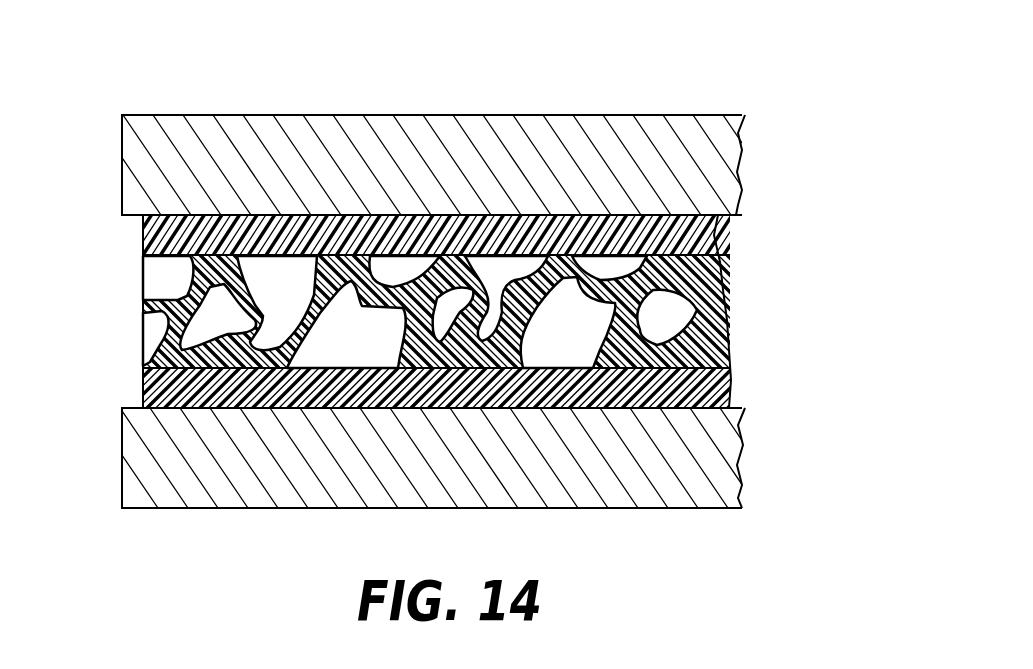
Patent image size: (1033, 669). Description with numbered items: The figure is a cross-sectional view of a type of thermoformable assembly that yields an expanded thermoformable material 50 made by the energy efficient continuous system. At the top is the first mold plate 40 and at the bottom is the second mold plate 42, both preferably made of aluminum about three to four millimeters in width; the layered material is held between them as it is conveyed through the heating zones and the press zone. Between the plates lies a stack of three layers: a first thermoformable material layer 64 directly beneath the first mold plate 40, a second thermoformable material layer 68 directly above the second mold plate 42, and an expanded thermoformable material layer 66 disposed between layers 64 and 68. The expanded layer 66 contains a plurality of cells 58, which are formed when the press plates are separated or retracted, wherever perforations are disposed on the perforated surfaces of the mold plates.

The first mold plate 40 is at (556, 112).
The second mold plate 42 is at (614, 516).
The expanded thermoformable material 50 is at (791, 81).
The cells 58 is at (160, 276).
The first thermoformable material layer 64 is at (720, 242).
The expanded thermoformable material layer 66 is at (722, 350).
The second thermoformable material layer 68 is at (722, 395).